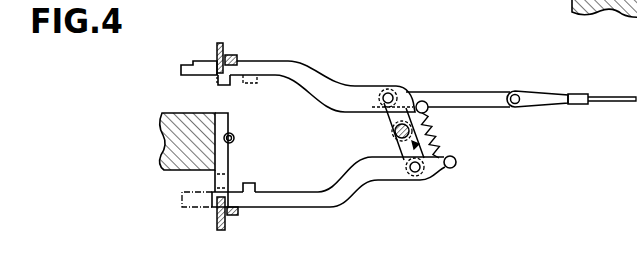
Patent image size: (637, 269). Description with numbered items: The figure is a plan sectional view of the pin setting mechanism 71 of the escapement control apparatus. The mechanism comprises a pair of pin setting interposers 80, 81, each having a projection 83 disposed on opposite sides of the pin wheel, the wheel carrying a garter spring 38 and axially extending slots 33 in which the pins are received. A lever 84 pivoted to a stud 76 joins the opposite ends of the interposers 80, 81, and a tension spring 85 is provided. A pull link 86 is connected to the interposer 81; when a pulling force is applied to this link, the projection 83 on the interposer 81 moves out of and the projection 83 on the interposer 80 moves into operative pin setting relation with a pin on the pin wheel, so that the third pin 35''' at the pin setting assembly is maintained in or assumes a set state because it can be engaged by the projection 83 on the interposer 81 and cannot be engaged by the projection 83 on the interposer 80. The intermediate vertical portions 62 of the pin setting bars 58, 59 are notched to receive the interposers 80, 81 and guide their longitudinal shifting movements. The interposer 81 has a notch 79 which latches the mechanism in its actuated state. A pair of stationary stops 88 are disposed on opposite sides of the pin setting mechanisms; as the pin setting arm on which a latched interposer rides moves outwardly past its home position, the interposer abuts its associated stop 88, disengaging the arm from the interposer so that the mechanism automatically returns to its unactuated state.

The slot 33 is at (205, 122).
The third pin 35''' is at (226, 152).
The garter spring 38 is at (234, 139).
The pin setting bar 58 is at (218, 212).
The pin setting bar 59 is at (219, 42).
The intermediate portion 62 is at (216, 52).
The pin setting mechanism 71 is at (322, 69).
The stud 76 is at (395, 134).
The notch 79 is at (191, 64).
The pin setting interposer 80 is at (342, 201).
The pin setting interposer 81 is at (292, 62).
The projection 83 is at (217, 82).
The lever 84 is at (388, 120).
The tension spring 85 is at (431, 140).
The pull link 86 is at (545, 97).
The stationary stop 88 is at (234, 55).